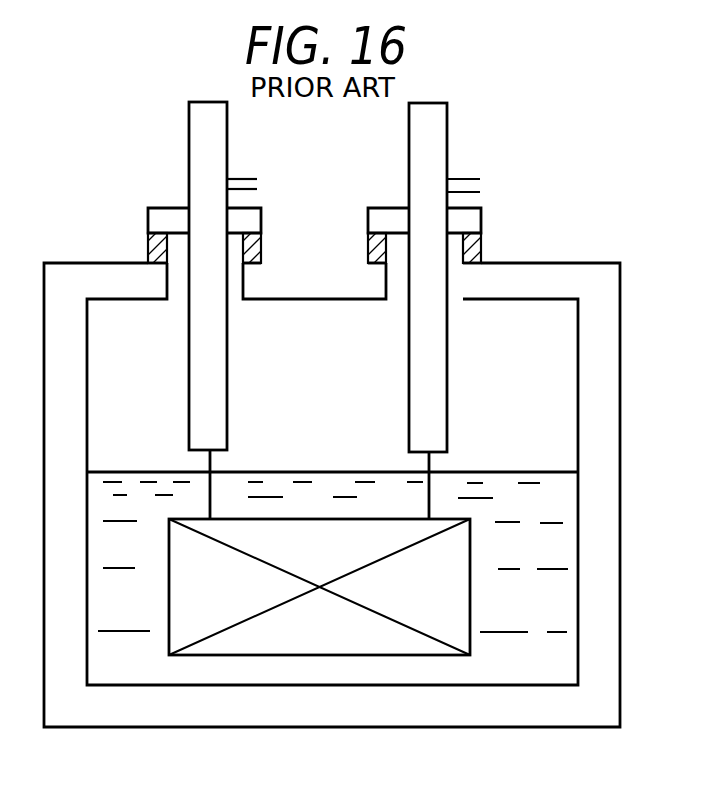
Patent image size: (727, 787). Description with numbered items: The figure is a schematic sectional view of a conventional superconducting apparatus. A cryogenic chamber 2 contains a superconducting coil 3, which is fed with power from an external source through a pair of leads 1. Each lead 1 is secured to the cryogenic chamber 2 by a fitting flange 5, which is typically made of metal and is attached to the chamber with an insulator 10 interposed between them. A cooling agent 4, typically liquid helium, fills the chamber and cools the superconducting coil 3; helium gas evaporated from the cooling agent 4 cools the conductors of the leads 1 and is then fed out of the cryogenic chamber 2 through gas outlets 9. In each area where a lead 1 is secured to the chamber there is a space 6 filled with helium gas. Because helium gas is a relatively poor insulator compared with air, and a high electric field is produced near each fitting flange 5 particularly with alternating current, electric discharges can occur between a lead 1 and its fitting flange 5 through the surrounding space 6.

The lead 1 is at (434, 143).
The cryogenic chamber 2 is at (610, 350).
The superconducting coil 3 is at (458, 555).
The cooling agent 4 is at (563, 603).
The fitting flange 5 is at (470, 220).
The space 6 is at (177, 268).
The gas outlet 9 is at (248, 183).
The insulator 10 is at (482, 242).